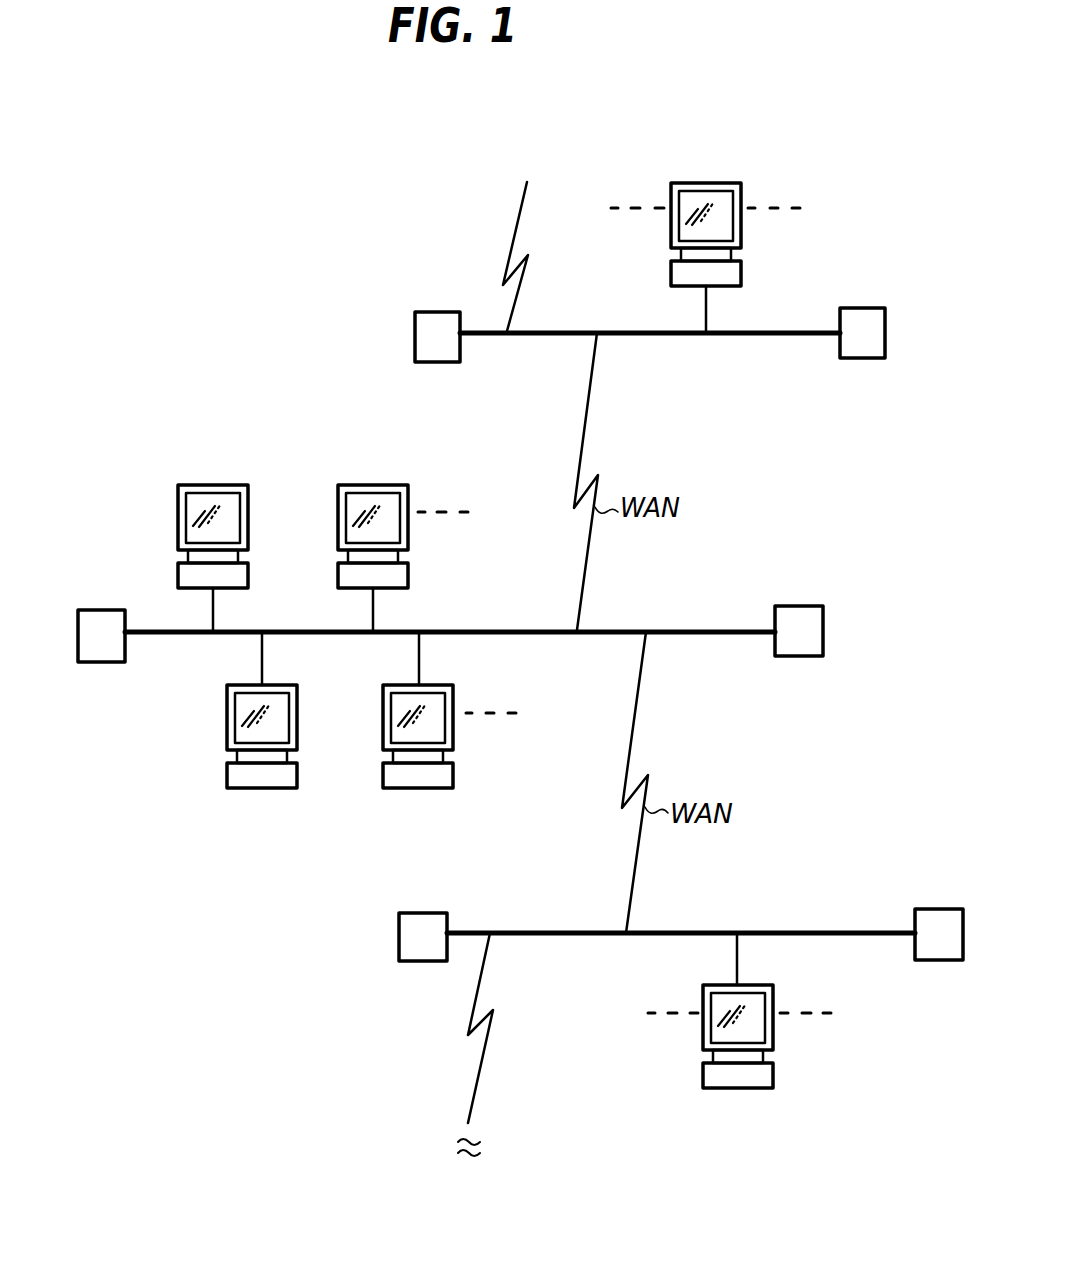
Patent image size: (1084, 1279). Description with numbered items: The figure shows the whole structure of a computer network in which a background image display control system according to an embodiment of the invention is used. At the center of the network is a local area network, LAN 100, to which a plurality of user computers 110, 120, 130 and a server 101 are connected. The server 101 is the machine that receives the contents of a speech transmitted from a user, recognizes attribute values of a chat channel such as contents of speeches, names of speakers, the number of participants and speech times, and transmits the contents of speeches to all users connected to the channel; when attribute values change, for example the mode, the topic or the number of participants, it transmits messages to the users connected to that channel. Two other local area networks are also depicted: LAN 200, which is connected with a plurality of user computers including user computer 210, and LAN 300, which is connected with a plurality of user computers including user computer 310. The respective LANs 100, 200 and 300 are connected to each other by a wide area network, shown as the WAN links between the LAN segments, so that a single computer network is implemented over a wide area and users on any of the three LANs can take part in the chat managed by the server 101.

The LAN 100 is at (697, 634).
The LAN 200 is at (733, 336).
The LAN 300 is at (515, 936).
The server 101 is at (220, 485).
The user computer 110 is at (380, 485).
The user computer 120 is at (285, 788).
The user computer 130 is at (445, 788).
The user computer 210 is at (726, 183).
The user computer 310 is at (762, 1091).